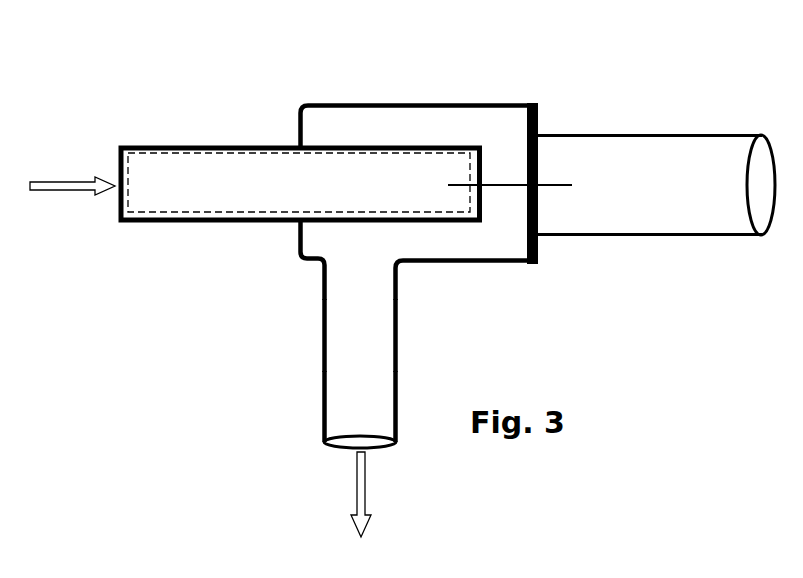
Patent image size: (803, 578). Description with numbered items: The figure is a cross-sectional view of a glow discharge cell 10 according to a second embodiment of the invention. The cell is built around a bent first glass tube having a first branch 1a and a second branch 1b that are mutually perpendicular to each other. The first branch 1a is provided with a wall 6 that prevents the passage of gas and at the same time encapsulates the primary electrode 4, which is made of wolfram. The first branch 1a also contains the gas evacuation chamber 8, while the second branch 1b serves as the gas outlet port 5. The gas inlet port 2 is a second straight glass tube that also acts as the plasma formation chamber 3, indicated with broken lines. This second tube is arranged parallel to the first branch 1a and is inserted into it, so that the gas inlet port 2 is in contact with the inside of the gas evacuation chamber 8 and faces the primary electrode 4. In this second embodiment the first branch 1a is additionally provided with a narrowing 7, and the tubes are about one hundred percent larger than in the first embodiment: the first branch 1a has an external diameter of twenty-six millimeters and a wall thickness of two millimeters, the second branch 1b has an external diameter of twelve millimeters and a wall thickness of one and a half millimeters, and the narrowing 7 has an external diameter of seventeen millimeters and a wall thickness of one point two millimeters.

The glow discharge cell 10 is at (566, 72).
The first branch 1a is at (368, 123).
The second branch 1b is at (353, 343).
The gas inlet port 2 is at (211, 167).
The plasma formation chamber 3 is at (262, 150).
The primary electrode 4 is at (497, 183).
The gas outlet port 5 is at (355, 367).
The wall 6 is at (538, 242).
The narrowing 7 is at (673, 180).
The gas evacuation chamber 8 is at (493, 138).